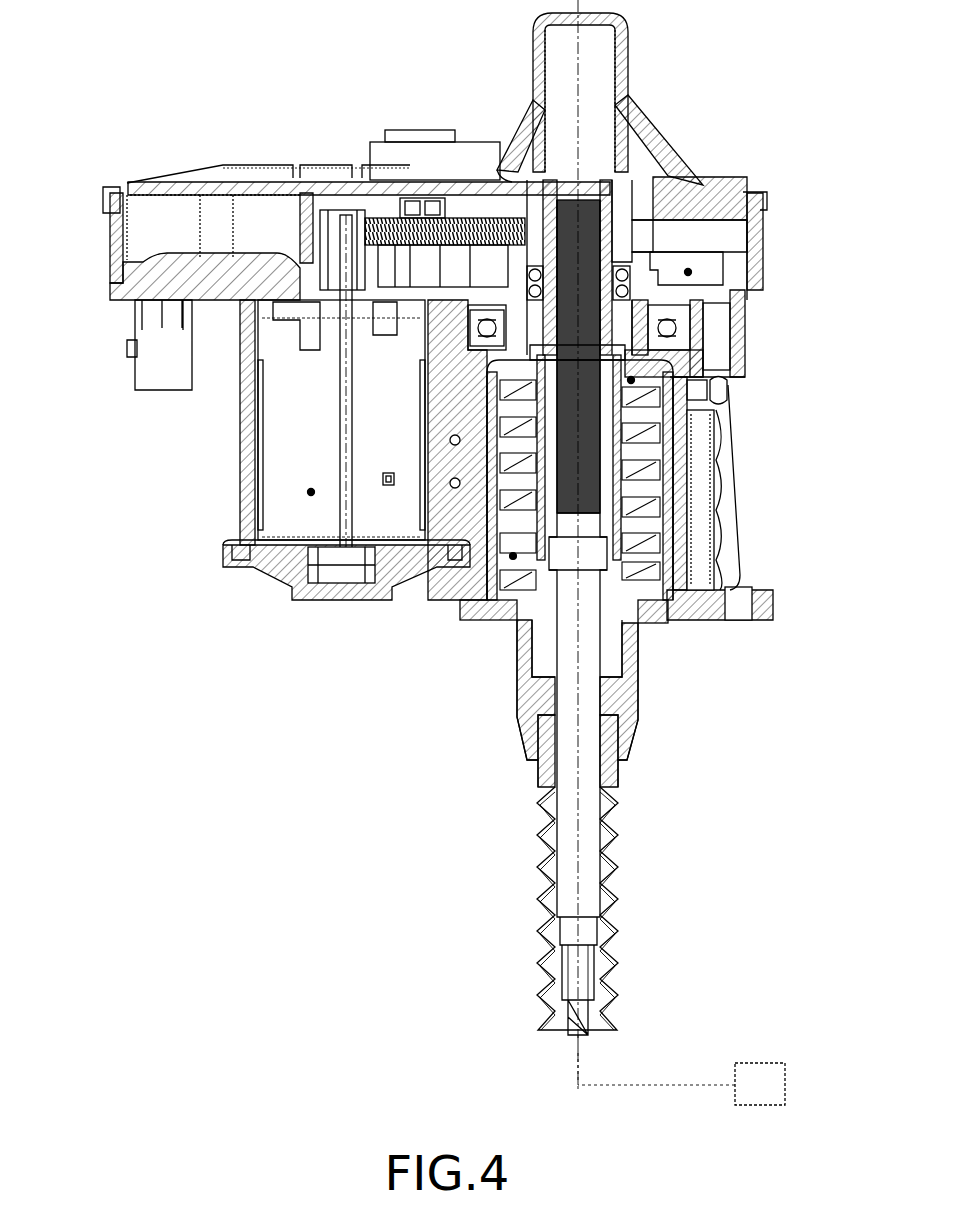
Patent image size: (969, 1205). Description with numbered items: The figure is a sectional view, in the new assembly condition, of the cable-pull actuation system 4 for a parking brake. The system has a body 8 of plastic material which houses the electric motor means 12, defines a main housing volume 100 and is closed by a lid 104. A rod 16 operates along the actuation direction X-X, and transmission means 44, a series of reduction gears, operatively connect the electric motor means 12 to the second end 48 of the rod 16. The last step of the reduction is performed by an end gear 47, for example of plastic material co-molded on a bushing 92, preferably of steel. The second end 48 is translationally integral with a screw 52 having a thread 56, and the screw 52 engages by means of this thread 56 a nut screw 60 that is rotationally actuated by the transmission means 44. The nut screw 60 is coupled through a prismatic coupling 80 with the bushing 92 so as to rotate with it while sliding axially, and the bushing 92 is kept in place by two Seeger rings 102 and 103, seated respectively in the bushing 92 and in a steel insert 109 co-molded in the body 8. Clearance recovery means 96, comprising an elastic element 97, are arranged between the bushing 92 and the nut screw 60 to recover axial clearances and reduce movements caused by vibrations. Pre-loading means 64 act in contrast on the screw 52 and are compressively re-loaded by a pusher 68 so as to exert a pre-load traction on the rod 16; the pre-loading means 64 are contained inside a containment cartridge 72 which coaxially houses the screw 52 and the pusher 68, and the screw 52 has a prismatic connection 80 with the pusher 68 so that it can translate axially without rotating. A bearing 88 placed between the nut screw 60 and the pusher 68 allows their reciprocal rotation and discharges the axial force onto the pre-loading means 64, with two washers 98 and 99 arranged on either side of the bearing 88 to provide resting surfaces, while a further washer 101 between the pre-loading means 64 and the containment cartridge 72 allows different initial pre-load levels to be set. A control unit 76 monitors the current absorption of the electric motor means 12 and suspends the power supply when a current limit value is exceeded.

The cable-pull actuation system 4 is at (177, 88).
The body 8 is at (118, 288).
The electric motor means 12 is at (233, 553).
The rod 16 is at (608, 1000).
The transmission means 44 is at (355, 206).
The end gear 47 is at (690, 272).
The second end 48 is at (590, 218).
The screw 52 is at (607, 643).
The thread 56 is at (687, 497).
The nut screw 60 is at (700, 232).
The pre-loading means 64 is at (490, 597).
The pusher 68 is at (723, 420).
The containment cartridge 72 is at (690, 450).
The control unit 76 is at (681, 1070).
The prismatic connection 80 is at (635, 218).
The bearing 88 is at (655, 352).
The bushing 92 is at (632, 210).
The clearance recovery means 96 is at (487, 328).
The elastic element 97 is at (512, 222).
The washer 98 is at (652, 345).
The washer 99 is at (728, 387).
The main housing volume 100 is at (710, 231).
The further washer 101 is at (670, 617).
The Seeger ring 102 is at (308, 493).
The Seeger ring 103 is at (440, 198).
The lid 104 is at (130, 188).
The steel insert 109 is at (425, 355).